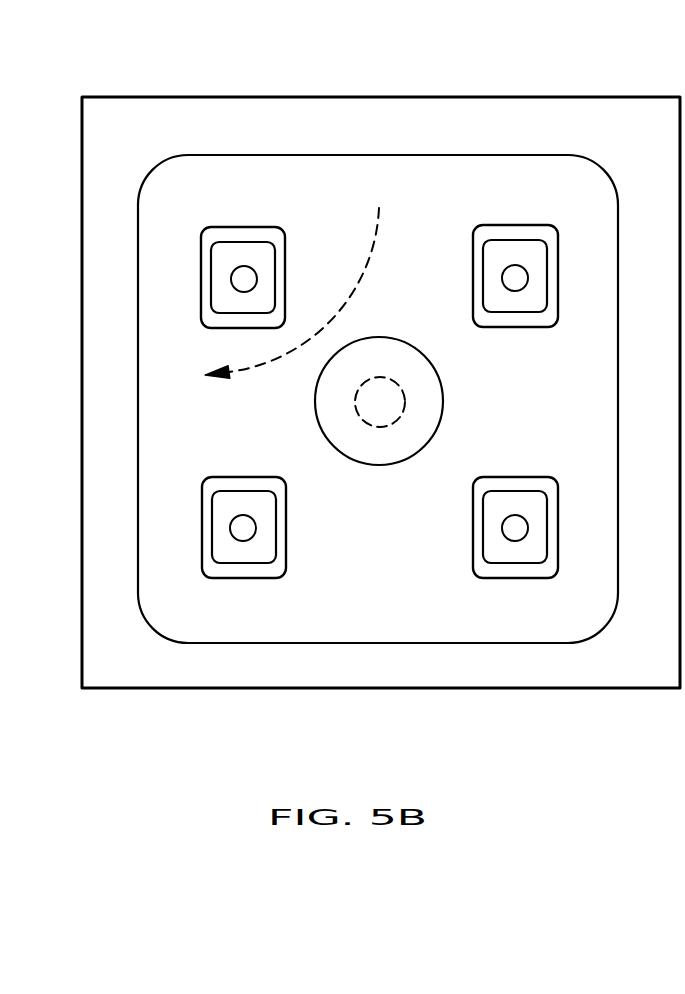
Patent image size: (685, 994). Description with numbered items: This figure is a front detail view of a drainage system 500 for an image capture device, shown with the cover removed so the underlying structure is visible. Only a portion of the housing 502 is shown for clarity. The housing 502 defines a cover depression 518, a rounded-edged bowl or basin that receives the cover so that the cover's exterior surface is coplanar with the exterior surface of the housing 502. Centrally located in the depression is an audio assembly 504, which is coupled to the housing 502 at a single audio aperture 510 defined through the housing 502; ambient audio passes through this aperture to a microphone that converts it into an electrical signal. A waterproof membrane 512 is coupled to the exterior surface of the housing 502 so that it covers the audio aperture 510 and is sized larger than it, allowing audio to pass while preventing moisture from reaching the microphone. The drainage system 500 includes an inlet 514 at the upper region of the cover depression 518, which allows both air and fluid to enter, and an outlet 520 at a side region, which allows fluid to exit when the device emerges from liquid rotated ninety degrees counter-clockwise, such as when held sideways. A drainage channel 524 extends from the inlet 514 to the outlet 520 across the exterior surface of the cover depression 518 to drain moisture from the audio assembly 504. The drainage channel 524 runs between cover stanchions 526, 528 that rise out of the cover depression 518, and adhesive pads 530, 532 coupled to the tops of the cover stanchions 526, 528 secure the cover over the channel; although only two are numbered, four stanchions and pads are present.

The drainage system 500 is at (576, 190).
The housing 502 is at (139, 96).
The audio assembly 504 is at (400, 325).
The audio aperture 510 is at (403, 388).
The waterproof membrane 512 is at (366, 465).
The inlet 514 is at (453, 156).
The cover depression 518 is at (177, 155).
The outlet 520 is at (142, 387).
The drainage channel 524 is at (299, 277).
The cover stanchion 526 is at (222, 228).
The cover stanchion 528 is at (226, 578).
The adhesive pad 530 is at (211, 278).
The adhesive pad 532 is at (275, 527).